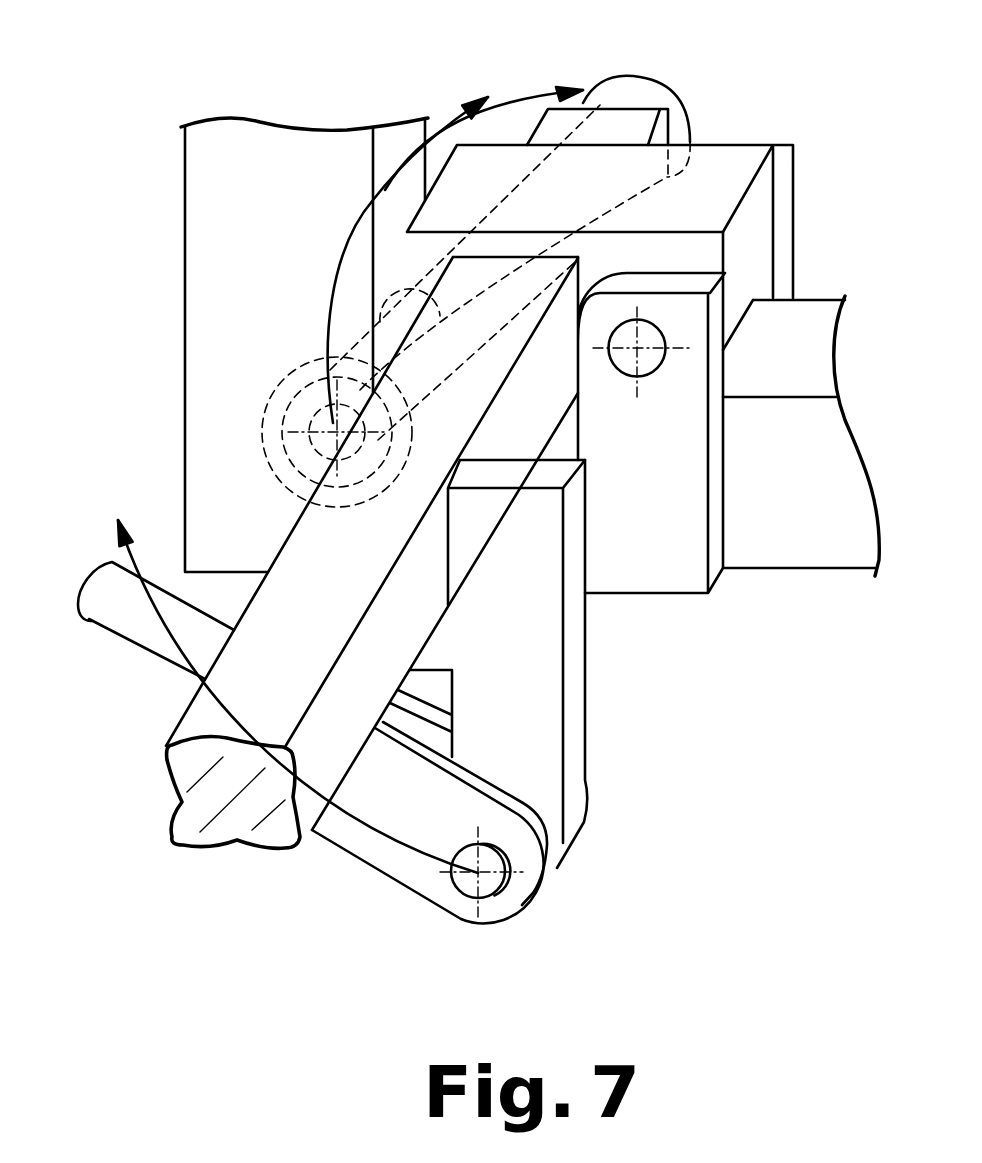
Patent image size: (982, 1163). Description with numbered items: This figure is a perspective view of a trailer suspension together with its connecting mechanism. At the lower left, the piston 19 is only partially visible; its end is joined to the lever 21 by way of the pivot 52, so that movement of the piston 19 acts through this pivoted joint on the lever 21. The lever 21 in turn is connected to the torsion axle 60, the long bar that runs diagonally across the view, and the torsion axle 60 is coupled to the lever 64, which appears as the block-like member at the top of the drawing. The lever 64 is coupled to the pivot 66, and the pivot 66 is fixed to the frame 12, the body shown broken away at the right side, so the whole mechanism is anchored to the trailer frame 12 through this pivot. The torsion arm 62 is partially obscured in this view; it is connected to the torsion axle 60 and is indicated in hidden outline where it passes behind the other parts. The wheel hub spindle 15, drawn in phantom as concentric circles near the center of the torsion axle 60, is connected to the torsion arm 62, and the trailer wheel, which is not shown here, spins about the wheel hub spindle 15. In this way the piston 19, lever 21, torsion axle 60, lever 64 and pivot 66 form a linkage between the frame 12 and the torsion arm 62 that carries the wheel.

The frame 12 is at (803, 540).
The wheel hub spindle 15 is at (357, 370).
The piston 19 is at (133, 620).
The lever 21 is at (533, 668).
The pivot 52 is at (485, 886).
The torsion axle 60 is at (312, 560).
The torsion arm 62 is at (442, 262).
The lever 64 is at (713, 155).
The pivot 66 is at (649, 344).